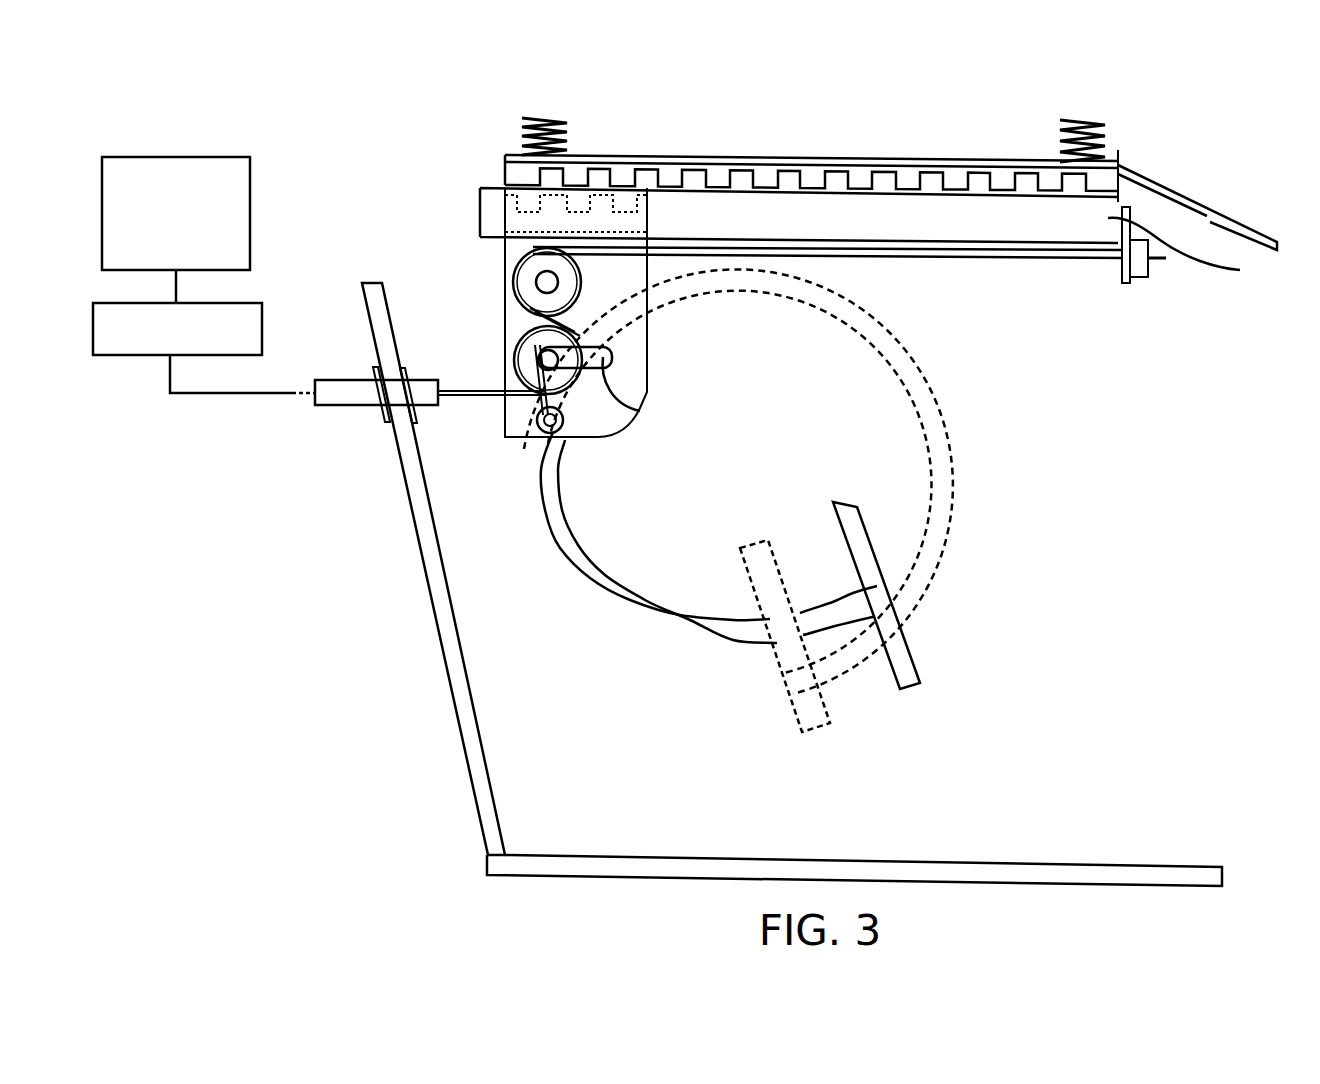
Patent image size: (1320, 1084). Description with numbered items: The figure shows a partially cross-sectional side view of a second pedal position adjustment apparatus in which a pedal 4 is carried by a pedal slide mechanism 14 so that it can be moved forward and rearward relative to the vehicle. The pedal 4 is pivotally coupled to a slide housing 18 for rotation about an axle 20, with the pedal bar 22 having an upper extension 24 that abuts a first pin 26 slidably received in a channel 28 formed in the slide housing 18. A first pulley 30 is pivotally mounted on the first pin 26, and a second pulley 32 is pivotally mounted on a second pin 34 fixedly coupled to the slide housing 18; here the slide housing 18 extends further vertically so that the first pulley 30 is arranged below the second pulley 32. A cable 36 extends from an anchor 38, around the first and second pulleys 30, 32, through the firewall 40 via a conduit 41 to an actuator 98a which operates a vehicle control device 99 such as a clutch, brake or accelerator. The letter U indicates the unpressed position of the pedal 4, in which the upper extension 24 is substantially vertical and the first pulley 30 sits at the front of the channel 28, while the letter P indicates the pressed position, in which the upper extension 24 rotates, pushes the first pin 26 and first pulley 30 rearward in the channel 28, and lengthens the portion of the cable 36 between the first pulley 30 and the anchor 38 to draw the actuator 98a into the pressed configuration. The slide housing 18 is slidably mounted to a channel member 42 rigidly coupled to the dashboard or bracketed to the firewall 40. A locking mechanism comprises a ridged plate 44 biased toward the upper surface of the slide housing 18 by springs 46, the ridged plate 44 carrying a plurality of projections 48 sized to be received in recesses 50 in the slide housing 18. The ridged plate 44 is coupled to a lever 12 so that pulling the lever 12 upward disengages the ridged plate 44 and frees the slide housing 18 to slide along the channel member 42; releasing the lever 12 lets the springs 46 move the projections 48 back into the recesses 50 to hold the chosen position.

The vehicle control device 99 is at (250, 207).
The actuator 98a is at (233, 303).
The conduit 41 is at (353, 407).
The pedal slide mechanism 14 is at (440, 435).
The firewall 40 is at (448, 688).
The ridged plate 44 is at (758, 157).
The springs 46 is at (549, 118).
The projections 48 is at (907, 191).
The slide housing 18 is at (647, 392).
The recesses 50 is at (532, 210).
The cable 36 is at (1040, 262).
The anchor 38 is at (1158, 278).
The lever 12 is at (1200, 196).
The channel member 42 is at (1240, 270).
The second pulley 32 is at (532, 270).
The second pin 34 is at (577, 293).
The first pulley 30 is at (520, 357).
The upper extension 24 is at (523, 357).
The first pin 26 is at (595, 348).
The channel 28 is at (643, 410).
The axle 20 is at (578, 421).
The pedal bar 22 is at (615, 558).
The pedal 4 is at (900, 576).
The pressed position P is at (785, 578).
The unpressed position U is at (872, 542).